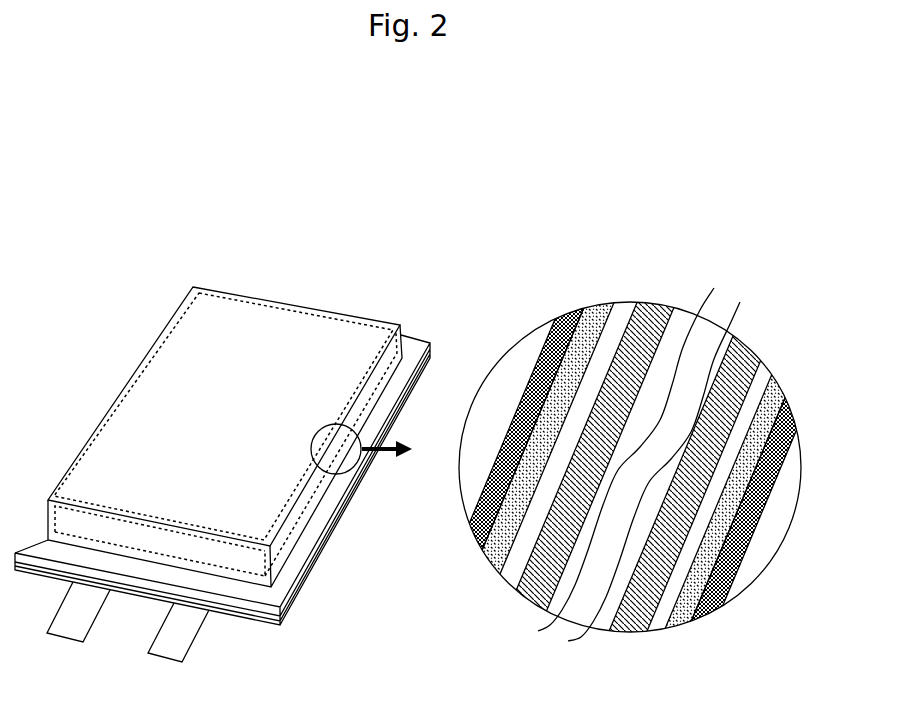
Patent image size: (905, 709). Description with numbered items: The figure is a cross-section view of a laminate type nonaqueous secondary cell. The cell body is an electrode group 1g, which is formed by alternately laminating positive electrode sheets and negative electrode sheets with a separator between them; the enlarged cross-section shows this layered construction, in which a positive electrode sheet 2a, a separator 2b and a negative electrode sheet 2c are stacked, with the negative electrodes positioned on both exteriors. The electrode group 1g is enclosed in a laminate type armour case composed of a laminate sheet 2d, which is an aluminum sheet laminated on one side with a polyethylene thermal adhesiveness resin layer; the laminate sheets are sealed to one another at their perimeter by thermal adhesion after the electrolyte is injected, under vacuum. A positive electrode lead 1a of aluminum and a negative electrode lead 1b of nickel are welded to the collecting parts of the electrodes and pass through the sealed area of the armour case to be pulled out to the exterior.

The electrode group 1g is at (168, 377).
The positive electrode lead 1a is at (80, 623).
The negative electrode lead 1b is at (183, 630).
The positive electrode sheet 2a is at (747, 357).
The separator 2b is at (767, 390).
The negative electrode sheet 2c is at (766, 437).
The laminate sheet 2d is at (812, 510).